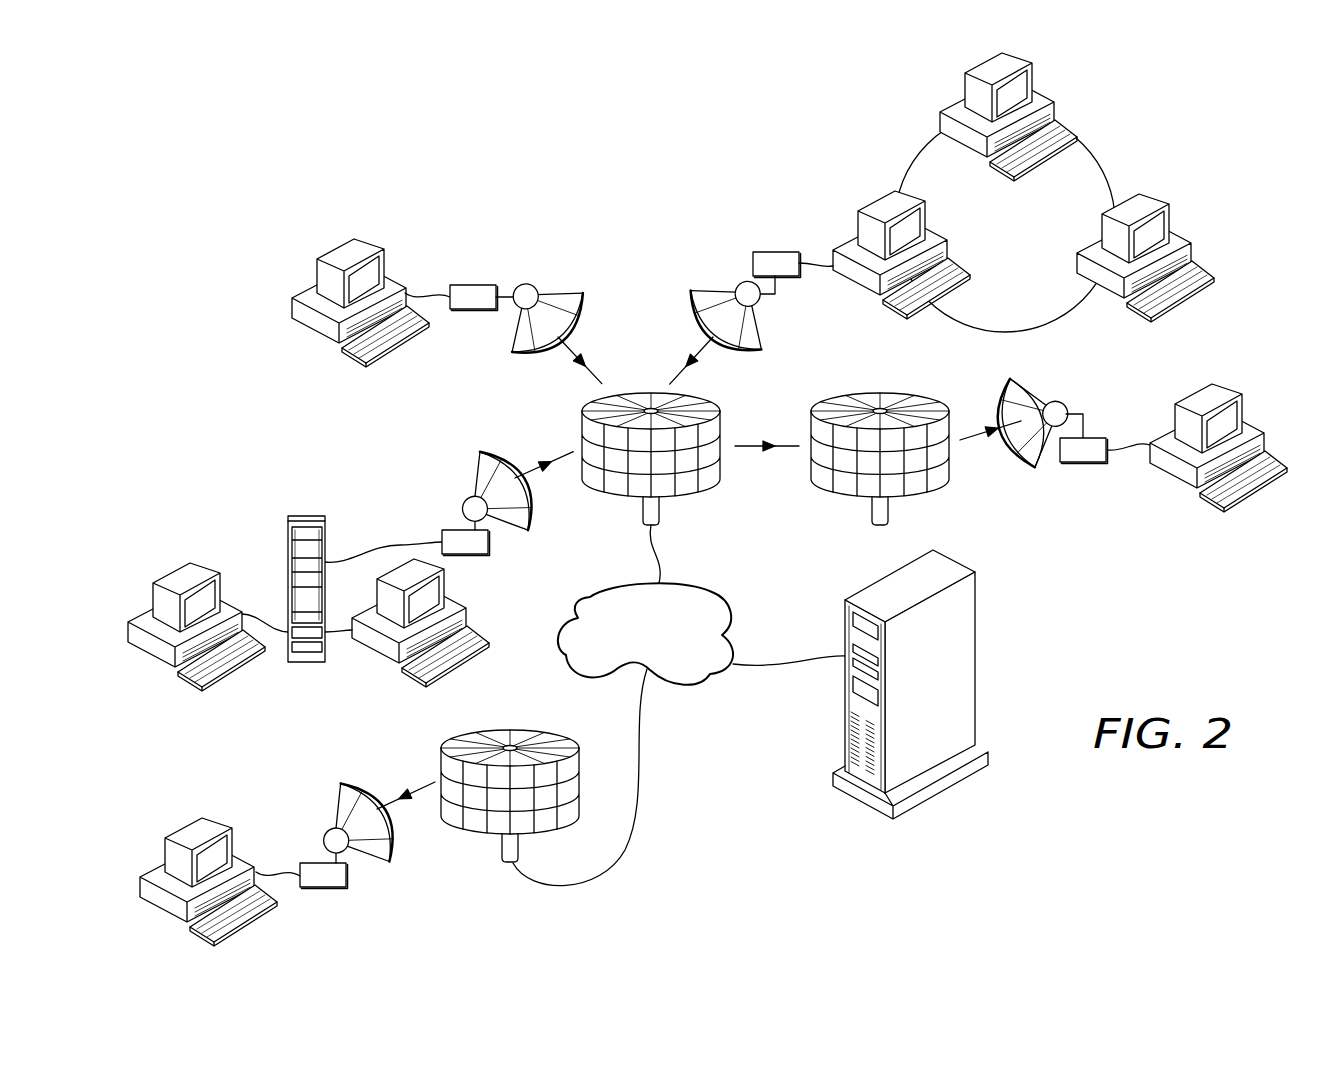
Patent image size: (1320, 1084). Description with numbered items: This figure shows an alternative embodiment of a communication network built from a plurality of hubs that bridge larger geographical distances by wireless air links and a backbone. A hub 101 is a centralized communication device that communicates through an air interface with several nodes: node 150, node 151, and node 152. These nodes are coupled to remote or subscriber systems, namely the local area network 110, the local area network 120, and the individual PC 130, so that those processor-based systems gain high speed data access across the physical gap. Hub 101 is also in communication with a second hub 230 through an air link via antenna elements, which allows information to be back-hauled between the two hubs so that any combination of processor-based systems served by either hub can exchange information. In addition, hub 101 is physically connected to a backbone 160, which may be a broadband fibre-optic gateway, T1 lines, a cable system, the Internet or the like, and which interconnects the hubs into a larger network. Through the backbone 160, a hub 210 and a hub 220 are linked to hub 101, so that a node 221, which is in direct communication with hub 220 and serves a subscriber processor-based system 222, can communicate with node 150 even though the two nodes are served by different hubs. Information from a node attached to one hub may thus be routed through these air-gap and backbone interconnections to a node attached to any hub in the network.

The hub 101 is at (642, 400).
The local area network 110 is at (290, 504).
The local area network 120 is at (1116, 133).
The PC 130 is at (344, 253).
The node 150 is at (450, 495).
The node 151 is at (722, 270).
The node 152 is at (510, 280).
The backbone 160 is at (697, 678).
The hub 210 is at (503, 735).
The hub 220 is at (466, 855).
The node 221 is at (348, 790).
The processor-based system 222 is at (191, 836).
The hub 230 is at (898, 396).